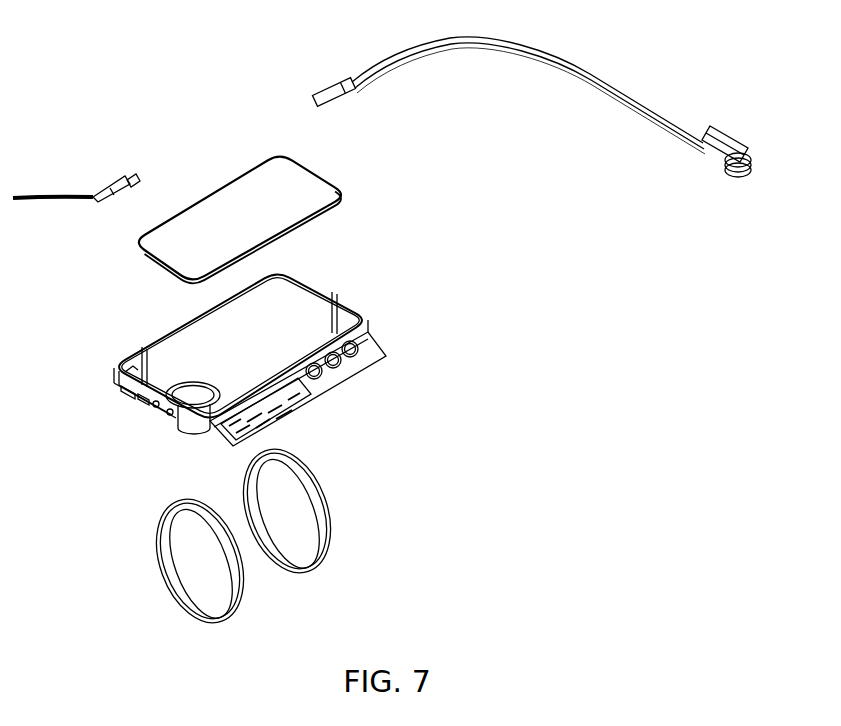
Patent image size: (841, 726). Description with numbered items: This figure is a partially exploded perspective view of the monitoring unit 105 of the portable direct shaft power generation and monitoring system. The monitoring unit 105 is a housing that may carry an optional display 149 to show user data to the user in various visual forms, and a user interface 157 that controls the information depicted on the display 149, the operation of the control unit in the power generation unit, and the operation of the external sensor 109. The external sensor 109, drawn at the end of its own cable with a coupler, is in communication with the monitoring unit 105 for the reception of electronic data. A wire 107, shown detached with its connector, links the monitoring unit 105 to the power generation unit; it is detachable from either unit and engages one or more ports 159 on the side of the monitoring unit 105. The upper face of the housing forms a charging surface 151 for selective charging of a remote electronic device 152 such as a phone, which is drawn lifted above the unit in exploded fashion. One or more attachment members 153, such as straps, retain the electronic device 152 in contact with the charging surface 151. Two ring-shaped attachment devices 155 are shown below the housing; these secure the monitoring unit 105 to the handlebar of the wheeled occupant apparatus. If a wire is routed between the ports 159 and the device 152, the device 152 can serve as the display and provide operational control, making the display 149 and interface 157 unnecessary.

The monitoring unit 105 is at (534, 467).
The wire 107 is at (80, 196).
The external sensor 109 is at (740, 147).
The display 149 is at (308, 398).
The charging surface 151 is at (215, 358).
The remote electronic device 152 is at (220, 226).
The attachment member 153 is at (133, 367).
The attachment devices 155 is at (287, 563).
The user interface 157 is at (340, 368).
The ports 159 is at (168, 415).